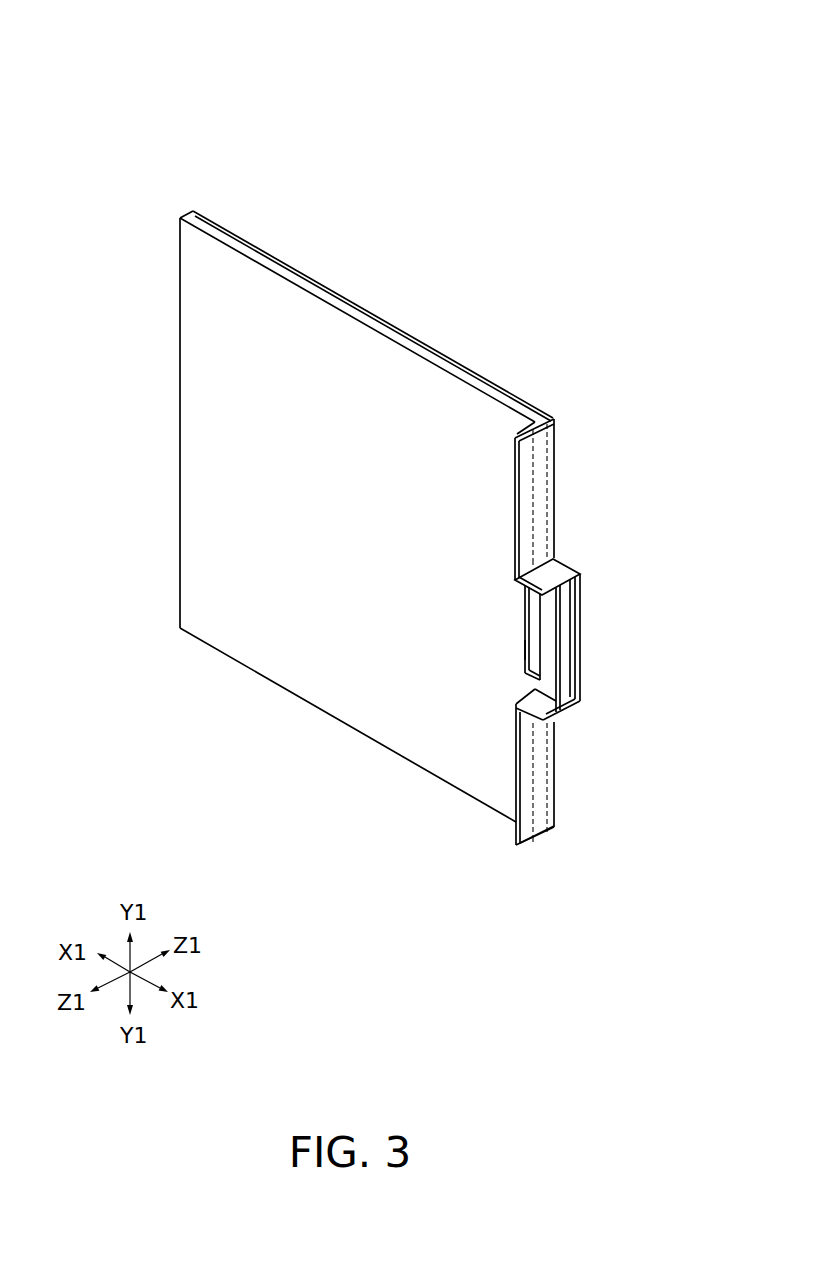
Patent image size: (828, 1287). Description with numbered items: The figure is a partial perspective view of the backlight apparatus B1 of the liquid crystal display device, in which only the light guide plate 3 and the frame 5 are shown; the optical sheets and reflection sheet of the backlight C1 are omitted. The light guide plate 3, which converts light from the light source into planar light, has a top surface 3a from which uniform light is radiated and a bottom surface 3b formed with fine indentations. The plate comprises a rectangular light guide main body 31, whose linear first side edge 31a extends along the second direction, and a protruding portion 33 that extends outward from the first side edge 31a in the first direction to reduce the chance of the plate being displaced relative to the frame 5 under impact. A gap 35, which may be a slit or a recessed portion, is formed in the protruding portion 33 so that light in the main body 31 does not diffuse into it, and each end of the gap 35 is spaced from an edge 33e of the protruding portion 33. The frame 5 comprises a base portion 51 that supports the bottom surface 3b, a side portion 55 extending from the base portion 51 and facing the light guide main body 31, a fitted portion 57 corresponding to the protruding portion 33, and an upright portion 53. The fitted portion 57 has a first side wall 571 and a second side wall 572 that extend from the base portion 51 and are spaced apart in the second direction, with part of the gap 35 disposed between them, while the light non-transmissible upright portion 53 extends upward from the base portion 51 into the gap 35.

The backlight apparatus B1 is at (215, 88).
The backlight C1 is at (206, 418).
The light guide plate 3 is at (368, 530).
The top surface 3a is at (447, 425).
The bottom surface 3b is at (500, 382).
The light guide main body 31 is at (348, 683).
The first side edge 31a is at (542, 532).
The frame 5 is at (569, 629).
The base portion 51 is at (560, 447).
The side portion 55 is at (545, 477).
The fitted portion 57 is at (552, 580).
The first side wall 571 is at (532, 688).
The second side wall 572 is at (562, 608).
The protruding portion 33 is at (615, 674).
The edge of the protruding portion 33e is at (555, 723).
The gap 35 is at (540, 633).
The upright portion 53 is at (534, 645).